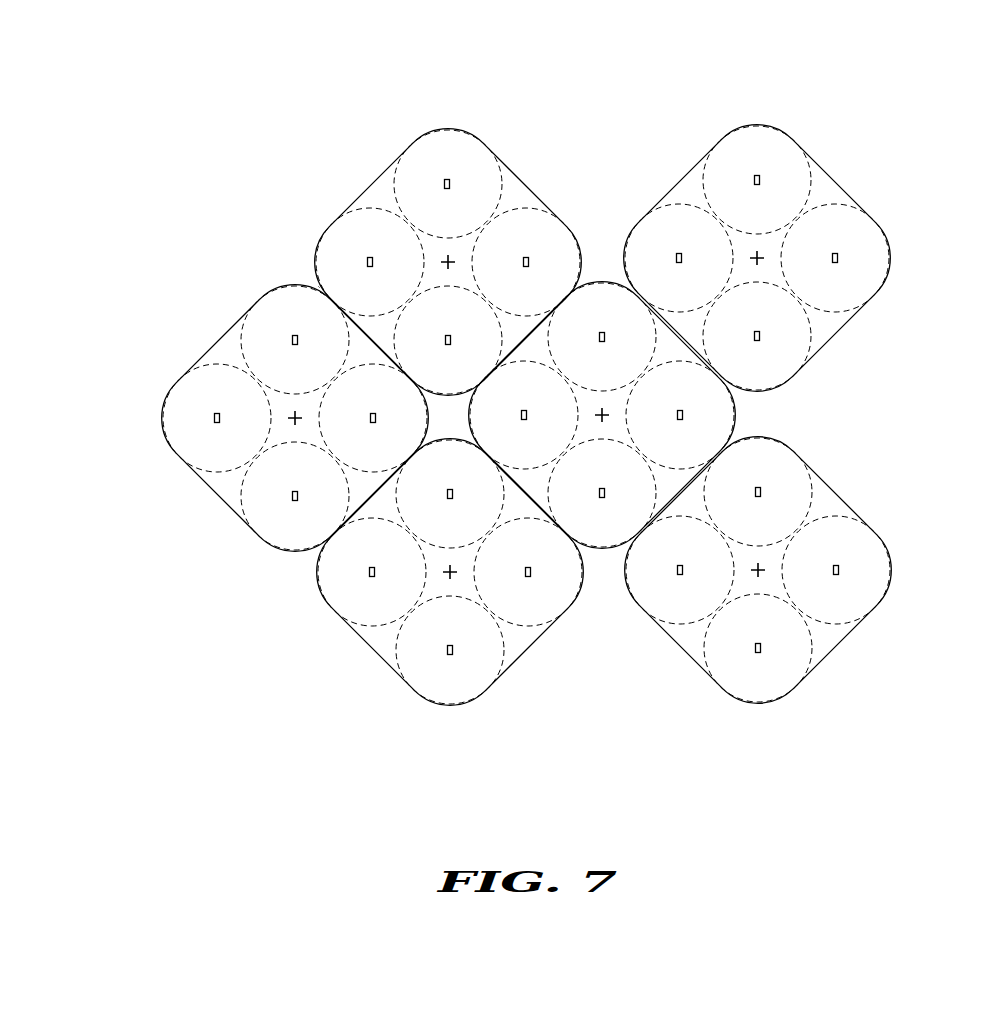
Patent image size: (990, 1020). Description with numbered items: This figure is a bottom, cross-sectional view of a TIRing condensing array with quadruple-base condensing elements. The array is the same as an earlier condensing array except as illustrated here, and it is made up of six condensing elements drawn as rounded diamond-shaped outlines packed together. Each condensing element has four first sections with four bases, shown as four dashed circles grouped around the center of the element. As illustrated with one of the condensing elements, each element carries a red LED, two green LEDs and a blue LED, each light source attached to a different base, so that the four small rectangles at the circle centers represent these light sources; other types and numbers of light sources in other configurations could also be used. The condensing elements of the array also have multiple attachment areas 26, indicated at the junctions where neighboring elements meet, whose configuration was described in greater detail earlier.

The attachment area 26 is at (318, 286).